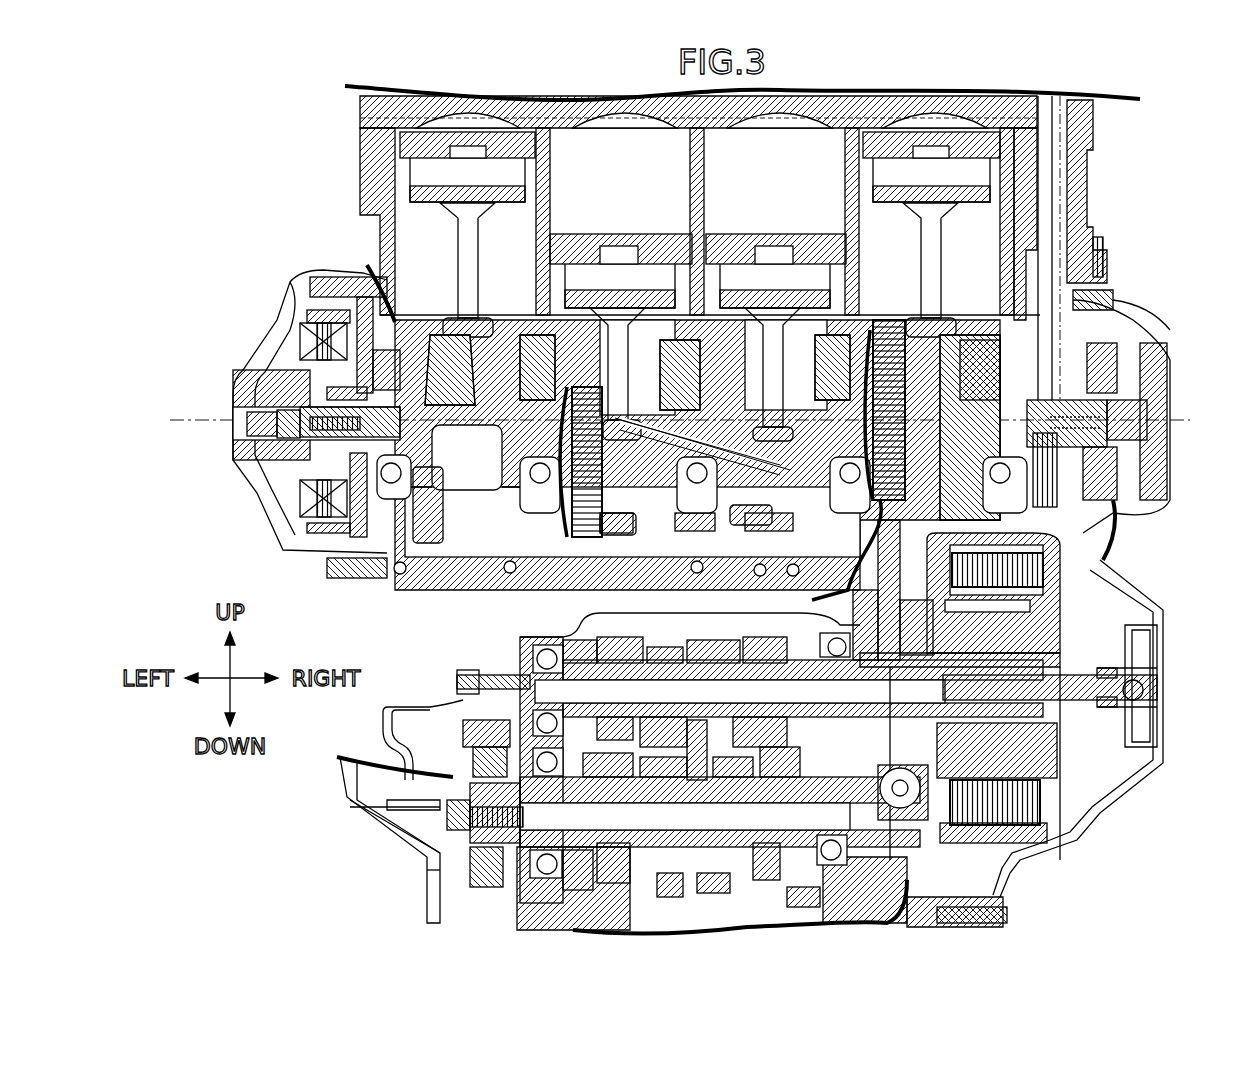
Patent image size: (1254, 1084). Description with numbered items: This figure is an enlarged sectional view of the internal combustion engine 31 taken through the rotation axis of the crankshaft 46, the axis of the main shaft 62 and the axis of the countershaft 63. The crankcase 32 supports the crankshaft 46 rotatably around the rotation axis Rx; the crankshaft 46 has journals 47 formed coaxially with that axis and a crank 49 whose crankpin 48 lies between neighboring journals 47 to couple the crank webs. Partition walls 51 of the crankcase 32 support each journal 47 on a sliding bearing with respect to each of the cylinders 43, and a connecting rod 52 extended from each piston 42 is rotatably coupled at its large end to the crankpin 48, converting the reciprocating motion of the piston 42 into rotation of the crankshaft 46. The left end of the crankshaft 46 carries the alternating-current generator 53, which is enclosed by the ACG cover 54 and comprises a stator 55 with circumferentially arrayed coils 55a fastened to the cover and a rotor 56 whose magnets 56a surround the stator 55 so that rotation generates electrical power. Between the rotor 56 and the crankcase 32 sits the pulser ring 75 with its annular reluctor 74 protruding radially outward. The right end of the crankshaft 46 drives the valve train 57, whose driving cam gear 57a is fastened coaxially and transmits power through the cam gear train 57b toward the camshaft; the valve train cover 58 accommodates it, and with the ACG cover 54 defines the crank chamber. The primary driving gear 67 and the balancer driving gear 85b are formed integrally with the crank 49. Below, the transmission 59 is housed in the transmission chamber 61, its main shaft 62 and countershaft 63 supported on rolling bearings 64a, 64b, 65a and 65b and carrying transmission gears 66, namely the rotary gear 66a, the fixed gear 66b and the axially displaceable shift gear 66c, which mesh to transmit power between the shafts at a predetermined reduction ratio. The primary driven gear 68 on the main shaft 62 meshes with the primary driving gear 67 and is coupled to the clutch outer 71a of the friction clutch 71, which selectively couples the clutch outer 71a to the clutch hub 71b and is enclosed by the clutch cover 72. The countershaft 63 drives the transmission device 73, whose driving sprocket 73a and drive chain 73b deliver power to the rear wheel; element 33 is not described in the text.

The internal combustion engine 31 is at (1165, 326).
The crankcase 32 is at (362, 580).
The cylinder block 33 is at (375, 232).
The piston 42 is at (400, 142).
The cylinder 43 is at (553, 165).
The crankshaft 46 is at (1147, 410).
The journal 47 is at (450, 340).
The crankpin 48 is at (466, 330).
The crank 49 is at (443, 530).
The partition wall 51 is at (410, 490).
The connecting rod 52 is at (478, 244).
The alternating-current generator 53 is at (297, 520).
The ACG cover 54 is at (255, 472).
The stator 55 is at (305, 372).
The coil 55a is at (300, 335).
The rotor 56 is at (297, 312).
The magnet 56a is at (360, 300).
The valve train 57 is at (1085, 182).
The driving cam gear 57a is at (1045, 507).
The cam gear train 57b is at (1103, 222).
The valve train cover 58 is at (1160, 505).
The transmission 59 is at (512, 648).
The transmission chamber 61 is at (845, 930).
The main shaft 62 is at (535, 675).
The countershaft 63 is at (525, 850).
The rolling bearing 64a is at (830, 640).
The rolling bearing 64b is at (540, 650).
The rolling bearing 65a is at (848, 860).
The rolling bearing 65b is at (558, 900).
The transmission gear 66 is at (764, 915).
The rotary gear 66a is at (622, 637).
The fixed gear 66b is at (598, 730).
The shift gear 66c is at (672, 647).
The primary driving gear 67 is at (888, 320).
The primary driven gear 68 is at (900, 530).
The friction clutch 71 is at (1093, 595).
The clutch outer 71a is at (915, 825).
The clutch hub 71b is at (1045, 767).
The clutch cover 72 is at (1140, 782).
The transmission device 73 is at (449, 724).
The driving sprocket 73a is at (470, 890).
The drive chain 73b is at (470, 738).
The reluctor 74 is at (372, 270).
The pulser ring 75 is at (388, 350).
The driving gear 85b is at (596, 525).